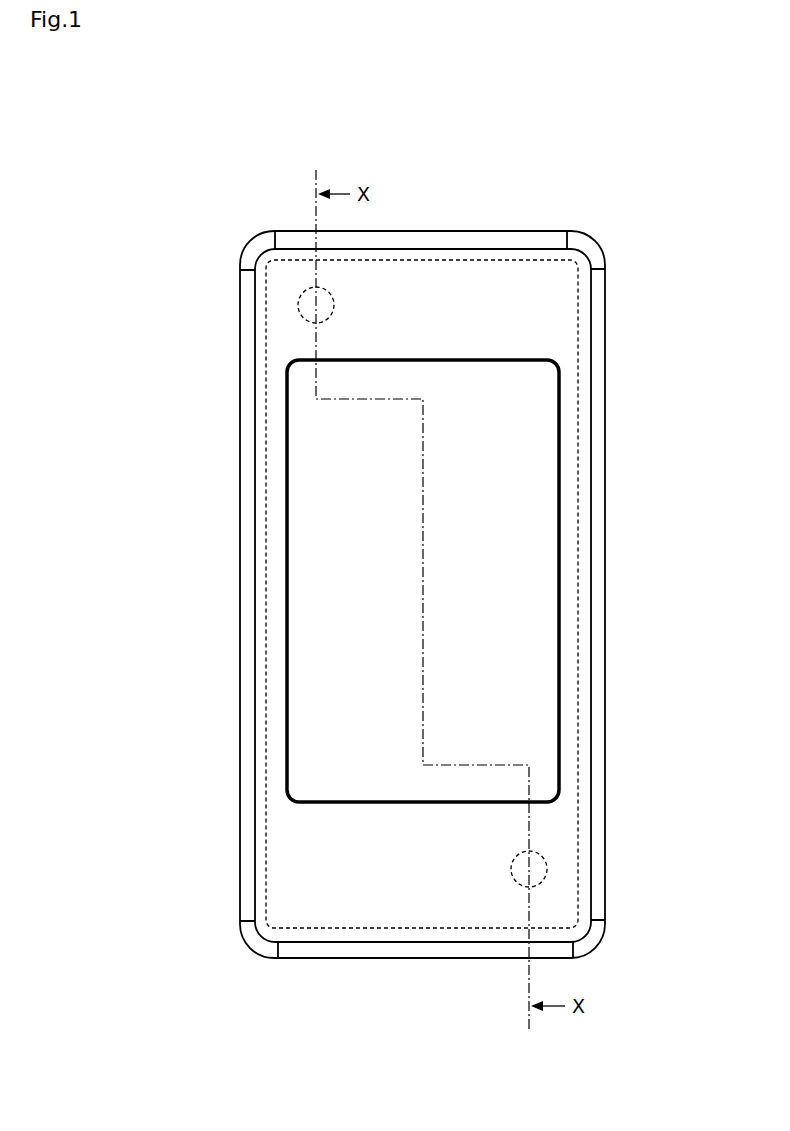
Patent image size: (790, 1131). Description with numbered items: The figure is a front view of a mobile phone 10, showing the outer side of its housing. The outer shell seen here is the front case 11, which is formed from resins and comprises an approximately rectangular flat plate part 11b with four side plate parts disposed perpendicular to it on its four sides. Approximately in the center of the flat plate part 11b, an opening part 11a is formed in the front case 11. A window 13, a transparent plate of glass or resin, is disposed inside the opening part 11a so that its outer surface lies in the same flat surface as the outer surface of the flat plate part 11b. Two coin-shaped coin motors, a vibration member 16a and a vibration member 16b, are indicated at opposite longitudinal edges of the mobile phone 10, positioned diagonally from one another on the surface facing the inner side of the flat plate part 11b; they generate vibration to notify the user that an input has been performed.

The mobile phone 10 is at (415, 1001).
The front case 11 is at (605, 715).
The opening part 11a is at (559, 528).
The flat plate part 11b is at (578, 365).
The window 13 is at (519, 467).
The vibration member 16a is at (547, 869).
The vibration member 16b is at (298, 305).